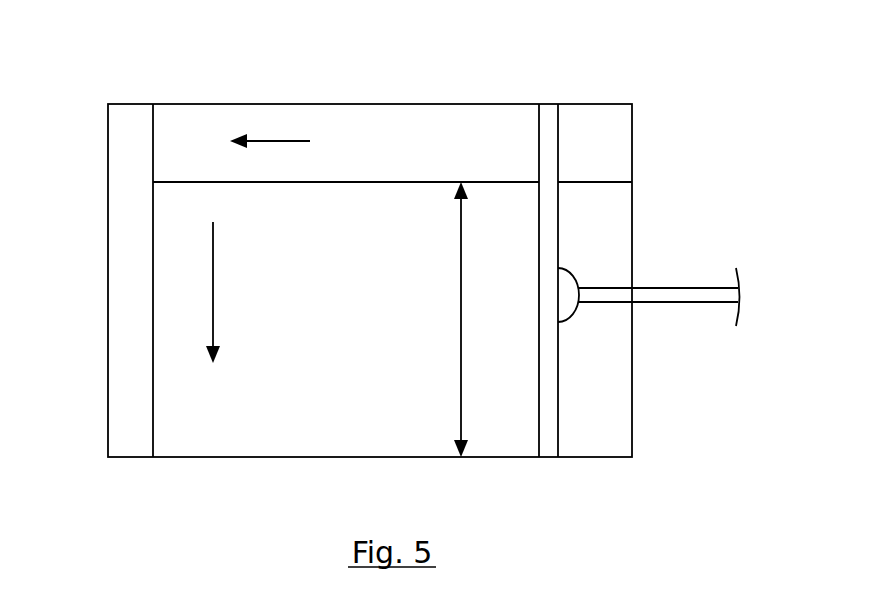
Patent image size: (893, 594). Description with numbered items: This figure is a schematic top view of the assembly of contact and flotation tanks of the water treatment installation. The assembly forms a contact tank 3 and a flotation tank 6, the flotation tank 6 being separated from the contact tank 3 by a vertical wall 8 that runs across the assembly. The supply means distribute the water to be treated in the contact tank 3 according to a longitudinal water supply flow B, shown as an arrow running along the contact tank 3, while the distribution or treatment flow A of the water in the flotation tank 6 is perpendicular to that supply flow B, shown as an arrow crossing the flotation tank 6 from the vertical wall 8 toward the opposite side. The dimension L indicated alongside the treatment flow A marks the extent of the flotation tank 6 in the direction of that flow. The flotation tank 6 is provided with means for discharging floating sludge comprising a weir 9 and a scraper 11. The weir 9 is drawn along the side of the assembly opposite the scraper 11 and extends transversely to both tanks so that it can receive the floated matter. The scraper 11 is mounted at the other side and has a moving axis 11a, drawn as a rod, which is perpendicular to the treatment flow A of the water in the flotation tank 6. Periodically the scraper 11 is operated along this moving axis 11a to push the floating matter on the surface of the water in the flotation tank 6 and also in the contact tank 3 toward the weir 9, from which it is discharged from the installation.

The contact tank 3 is at (362, 155).
The flotation tank 6 is at (339, 339).
The vertical wall 8 is at (427, 182).
The weir 9 is at (133, 272).
The scraper 11 is at (595, 220).
The moving axis 11a is at (700, 288).
The distribution flow A is at (212, 267).
The water supply flow B is at (272, 138).
The length L is at (451, 319).